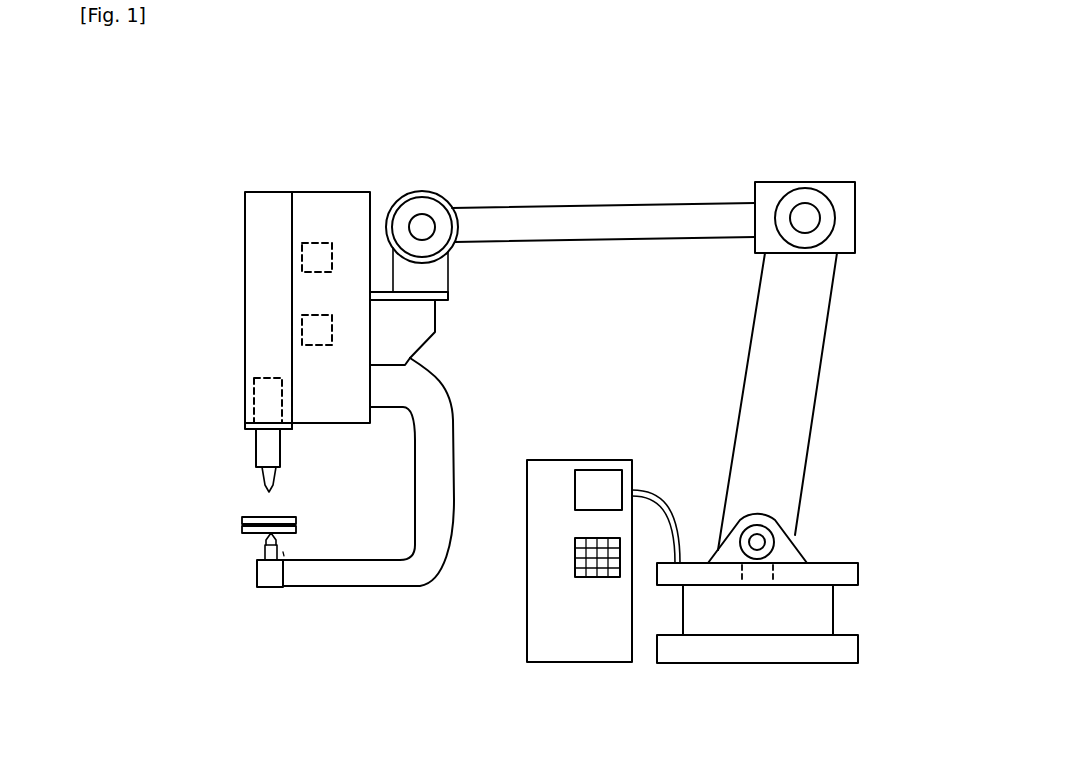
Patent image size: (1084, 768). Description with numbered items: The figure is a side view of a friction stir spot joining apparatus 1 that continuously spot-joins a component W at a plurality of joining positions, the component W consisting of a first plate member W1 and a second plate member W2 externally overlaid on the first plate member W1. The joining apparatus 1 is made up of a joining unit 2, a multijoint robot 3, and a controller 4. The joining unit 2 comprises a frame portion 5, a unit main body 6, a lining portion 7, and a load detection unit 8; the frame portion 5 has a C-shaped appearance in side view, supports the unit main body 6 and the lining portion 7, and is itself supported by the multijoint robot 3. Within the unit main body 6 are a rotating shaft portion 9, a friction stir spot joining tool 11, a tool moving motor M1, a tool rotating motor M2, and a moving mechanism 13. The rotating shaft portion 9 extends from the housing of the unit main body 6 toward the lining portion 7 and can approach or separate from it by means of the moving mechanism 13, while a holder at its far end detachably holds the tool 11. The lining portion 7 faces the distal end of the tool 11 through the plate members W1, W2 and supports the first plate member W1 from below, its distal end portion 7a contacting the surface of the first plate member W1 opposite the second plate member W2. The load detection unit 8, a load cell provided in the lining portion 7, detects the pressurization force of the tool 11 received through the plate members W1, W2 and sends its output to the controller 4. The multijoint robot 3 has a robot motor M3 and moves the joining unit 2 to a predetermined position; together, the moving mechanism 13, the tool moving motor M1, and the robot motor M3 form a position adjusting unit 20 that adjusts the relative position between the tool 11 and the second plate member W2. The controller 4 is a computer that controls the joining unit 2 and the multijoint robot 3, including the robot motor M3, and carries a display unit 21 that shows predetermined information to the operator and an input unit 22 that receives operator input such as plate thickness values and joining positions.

The friction stir spot joining apparatus 1 is at (113, 155).
The joining unit 2 is at (301, 157).
The multijoint robot 3 is at (831, 157).
The controller 4 is at (615, 434).
The frame portion 5 is at (455, 498).
The unit main body 6 is at (245, 343).
The lining portion 7 is at (262, 550).
The distal end portion 7a is at (268, 537).
The load detection unit 8 is at (272, 540).
The rotating shaft portion 9 is at (256, 452).
The friction stir spot joining tool 11 is at (270, 492).
The moving mechanism 13 is at (248, 410).
The position adjusting unit 20 is at (838, 353).
The display unit 21 is at (580, 470).
The input unit 22 is at (582, 577).
The tool moving motor M1 is at (318, 240).
The tool rotating motor M2 is at (337, 328).
The robot motor M3 is at (760, 586).
The component W is at (370, 497).
The first plate member W1 is at (298, 527).
The second plate member W2 is at (298, 522).